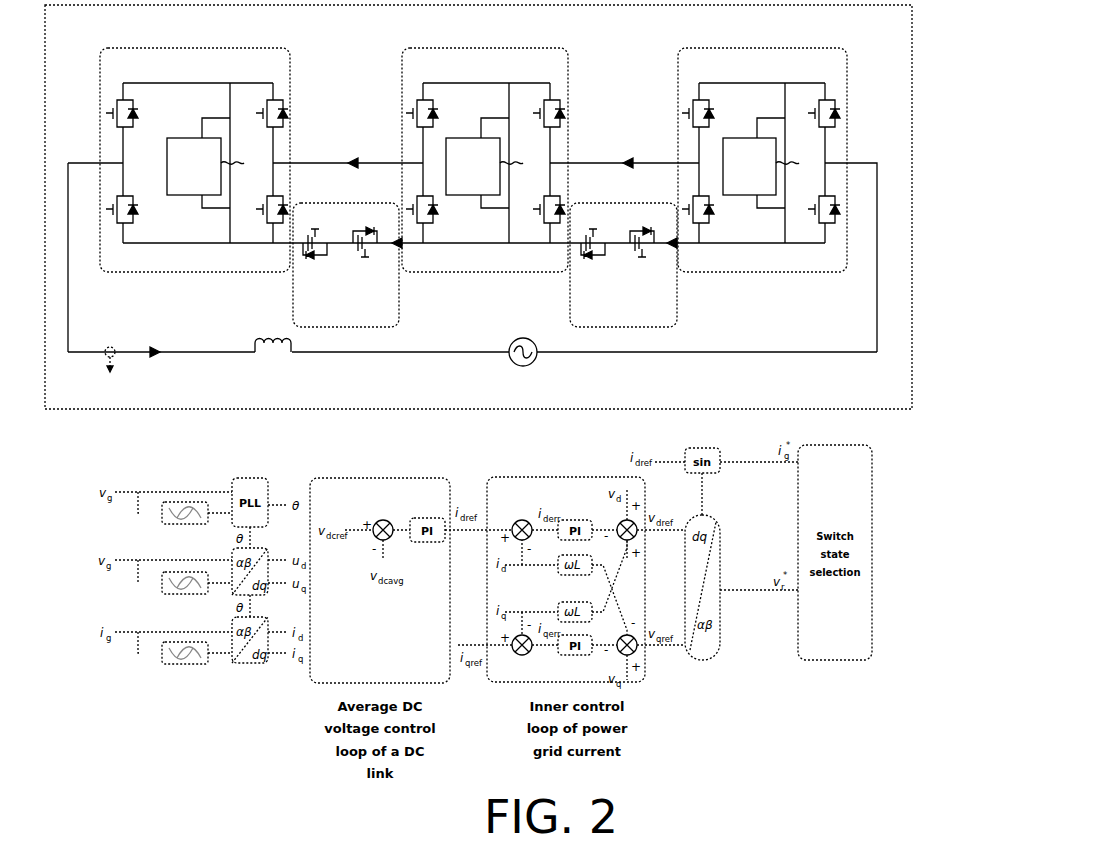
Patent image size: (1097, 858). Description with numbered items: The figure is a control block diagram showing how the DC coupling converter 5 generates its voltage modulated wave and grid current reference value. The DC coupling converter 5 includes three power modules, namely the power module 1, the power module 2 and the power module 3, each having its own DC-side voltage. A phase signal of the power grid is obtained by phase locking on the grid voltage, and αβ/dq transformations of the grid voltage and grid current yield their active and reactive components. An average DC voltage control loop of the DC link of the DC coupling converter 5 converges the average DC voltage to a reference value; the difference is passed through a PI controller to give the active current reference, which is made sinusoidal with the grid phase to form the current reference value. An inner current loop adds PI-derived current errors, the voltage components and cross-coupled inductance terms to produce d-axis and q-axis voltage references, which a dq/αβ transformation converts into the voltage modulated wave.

The DC coupling converter 5 is at (504, 207).
The power module 1 is at (195, 160).
The power module 2 is at (485, 160).
The power module 3 is at (762, 160).